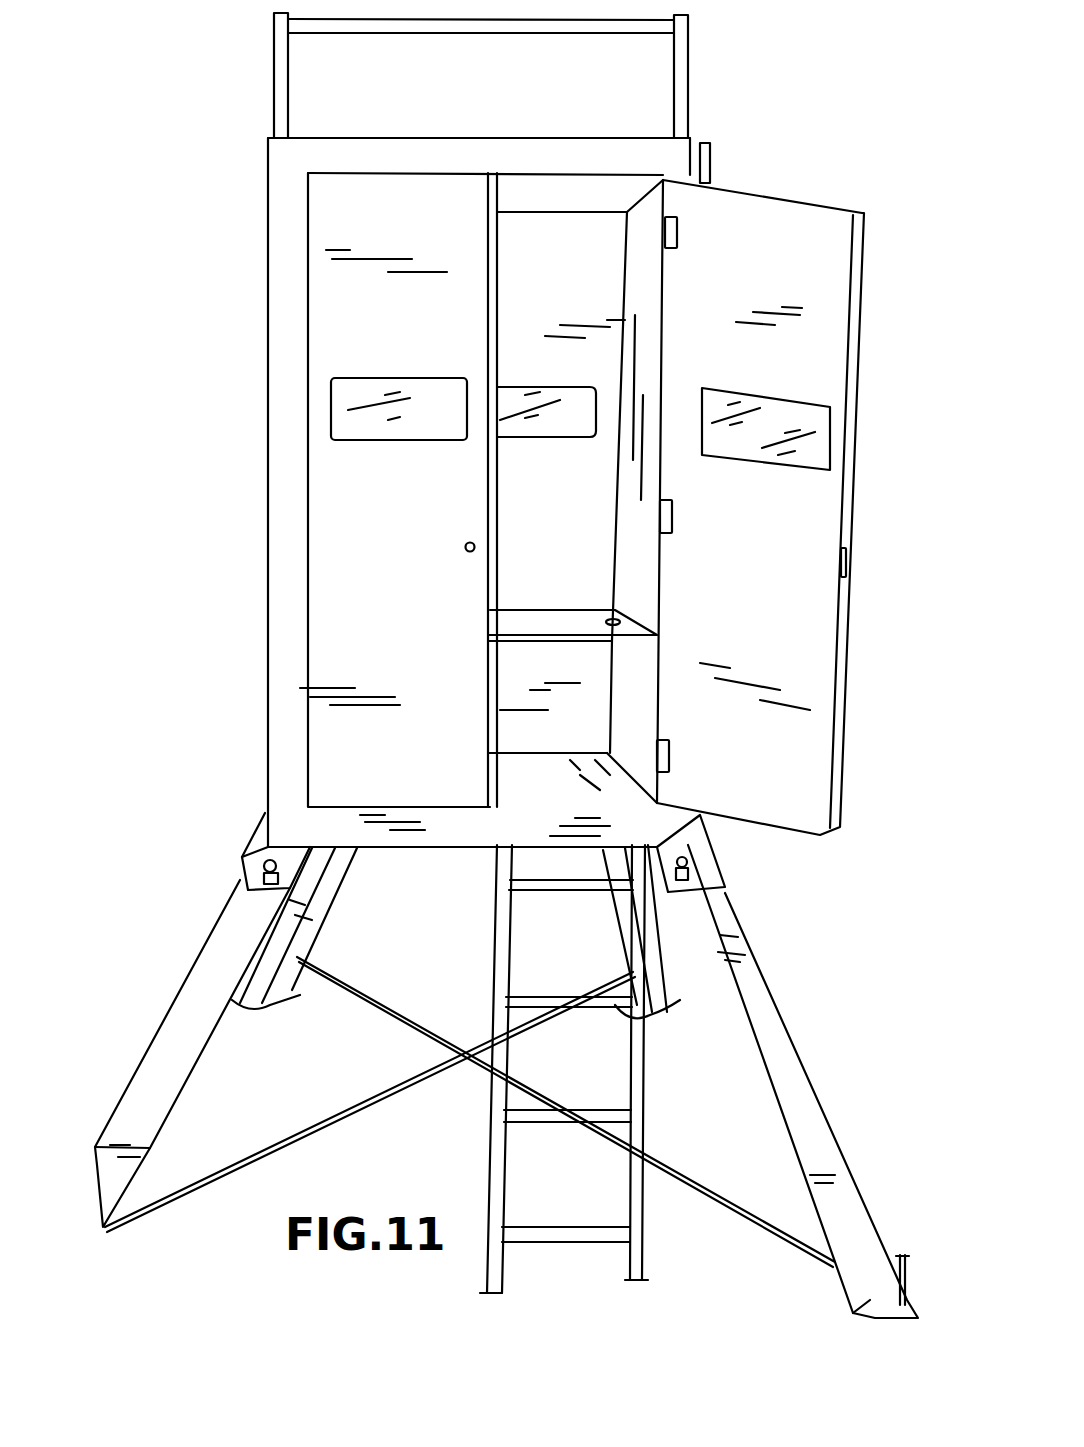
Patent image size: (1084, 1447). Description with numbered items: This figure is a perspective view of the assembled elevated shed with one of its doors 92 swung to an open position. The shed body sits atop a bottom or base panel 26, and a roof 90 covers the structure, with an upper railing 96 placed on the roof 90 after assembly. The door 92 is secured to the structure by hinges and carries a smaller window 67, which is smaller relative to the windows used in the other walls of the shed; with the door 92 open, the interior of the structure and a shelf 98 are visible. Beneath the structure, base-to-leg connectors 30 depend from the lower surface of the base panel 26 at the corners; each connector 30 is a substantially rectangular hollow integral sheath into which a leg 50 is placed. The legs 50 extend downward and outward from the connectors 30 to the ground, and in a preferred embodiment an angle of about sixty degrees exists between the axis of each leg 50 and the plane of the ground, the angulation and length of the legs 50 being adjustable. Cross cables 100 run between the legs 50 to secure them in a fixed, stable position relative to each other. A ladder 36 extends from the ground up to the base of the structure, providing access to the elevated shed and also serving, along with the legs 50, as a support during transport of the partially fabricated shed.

The upper railing 96 is at (274, 63).
The roof 90 is at (625, 150).
The smaller window 67 is at (815, 430).
The shelf 98 is at (585, 622).
The door 92 is at (789, 507).
The base-to-leg connector 30 is at (257, 850).
The base panel 26 is at (617, 790).
The cross cable 100 is at (318, 1115).
The ladder 36 is at (643, 1068).
The leg 50 is at (817, 1157).